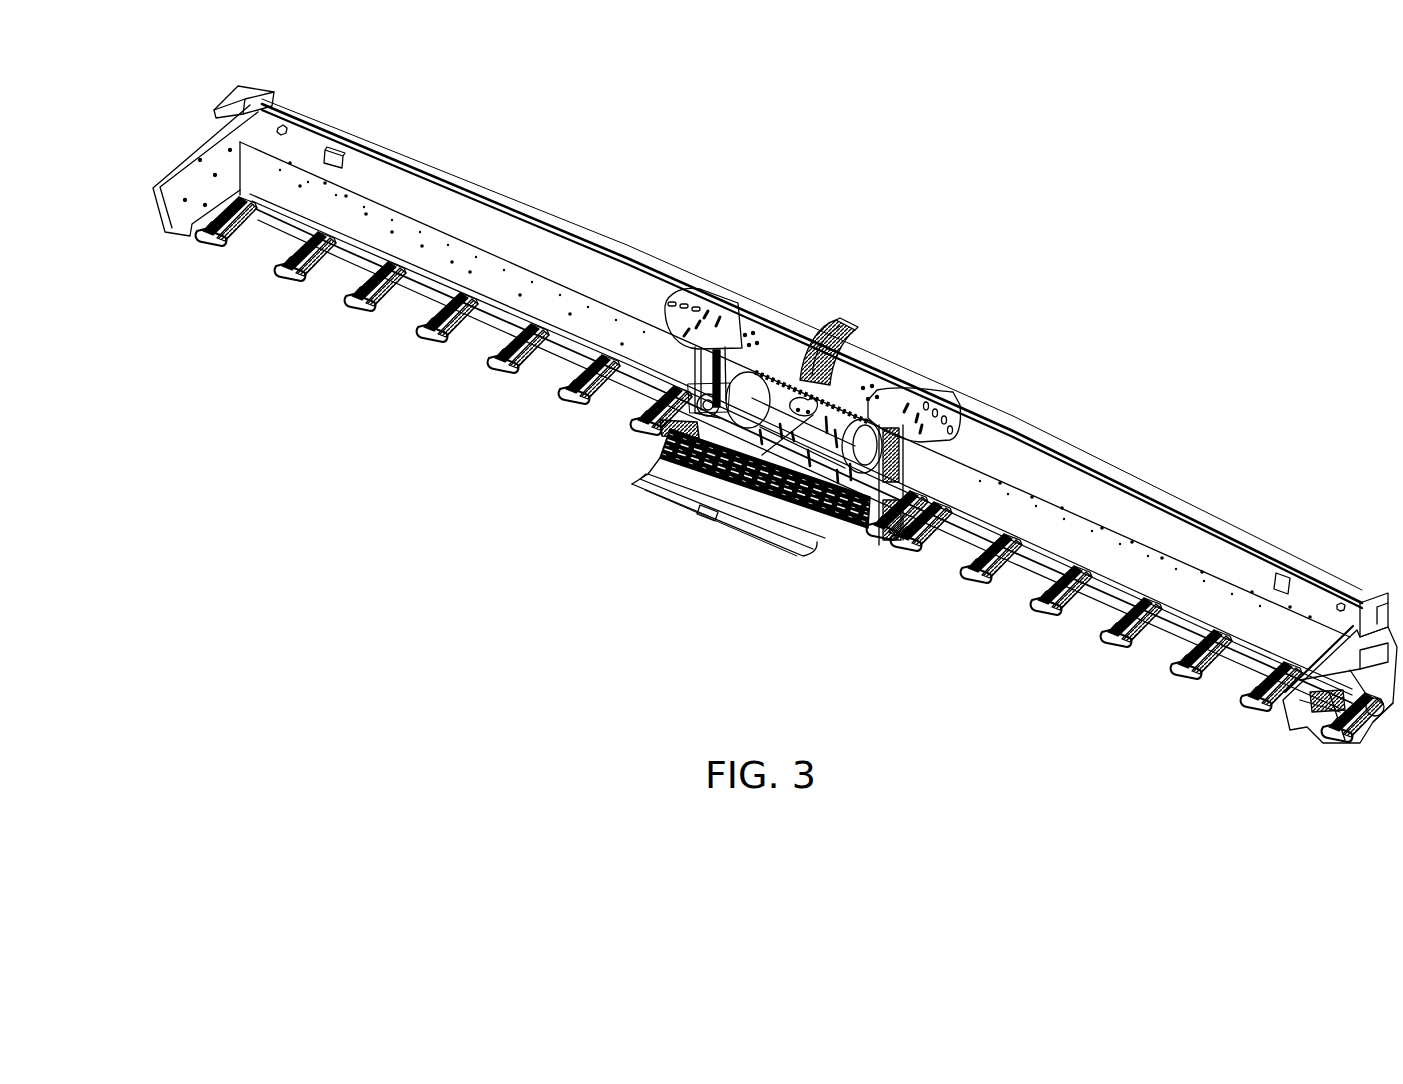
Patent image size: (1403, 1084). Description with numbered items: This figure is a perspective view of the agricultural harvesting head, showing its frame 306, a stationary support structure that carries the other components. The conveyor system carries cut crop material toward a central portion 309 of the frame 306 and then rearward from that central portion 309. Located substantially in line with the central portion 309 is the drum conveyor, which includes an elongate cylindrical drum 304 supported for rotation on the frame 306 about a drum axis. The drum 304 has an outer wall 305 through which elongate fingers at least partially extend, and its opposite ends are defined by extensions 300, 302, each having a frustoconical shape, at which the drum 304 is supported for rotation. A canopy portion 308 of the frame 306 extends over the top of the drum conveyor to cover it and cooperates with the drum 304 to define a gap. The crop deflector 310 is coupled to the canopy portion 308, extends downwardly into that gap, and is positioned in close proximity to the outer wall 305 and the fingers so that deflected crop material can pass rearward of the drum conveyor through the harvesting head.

The extension 300 is at (742, 355).
The extension 302 is at (955, 395).
The cylindrical drum 304 is at (862, 420).
The outer wall 305 is at (770, 515).
The frame 306 is at (522, 200).
The canopy portion 308 is at (777, 347).
The central portion 309 is at (700, 496).
The crop deflector 310 is at (826, 428).